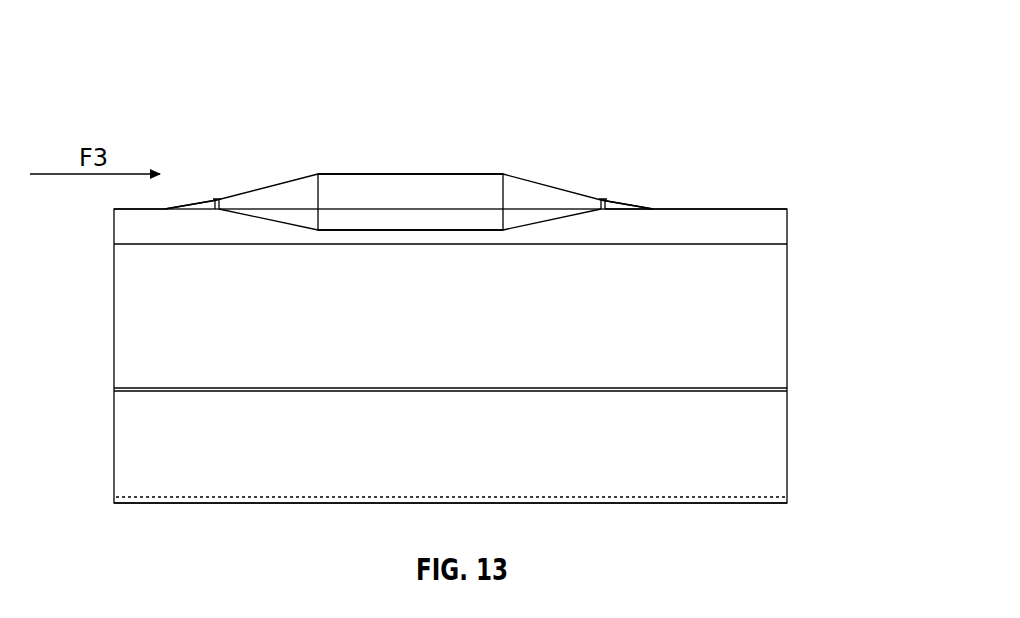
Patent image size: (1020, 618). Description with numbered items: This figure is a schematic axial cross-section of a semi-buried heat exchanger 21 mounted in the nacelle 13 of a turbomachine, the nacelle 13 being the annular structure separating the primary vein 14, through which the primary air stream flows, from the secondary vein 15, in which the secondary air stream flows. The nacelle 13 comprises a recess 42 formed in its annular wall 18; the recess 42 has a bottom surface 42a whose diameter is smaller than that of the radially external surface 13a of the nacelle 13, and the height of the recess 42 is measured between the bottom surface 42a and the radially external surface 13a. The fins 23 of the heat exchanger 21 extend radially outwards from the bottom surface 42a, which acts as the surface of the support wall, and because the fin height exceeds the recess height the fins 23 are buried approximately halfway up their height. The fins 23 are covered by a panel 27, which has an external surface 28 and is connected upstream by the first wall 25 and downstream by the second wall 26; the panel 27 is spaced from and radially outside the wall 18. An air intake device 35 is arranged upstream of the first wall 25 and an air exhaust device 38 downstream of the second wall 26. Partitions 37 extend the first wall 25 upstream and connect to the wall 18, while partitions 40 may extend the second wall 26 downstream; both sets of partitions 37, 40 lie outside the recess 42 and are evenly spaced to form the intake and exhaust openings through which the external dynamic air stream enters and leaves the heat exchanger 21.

The nacelle 13 is at (798, 206).
The radially external surface of the nacelle 13a is at (725, 206).
The primary vein 14 is at (450, 447).
The secondary vein 15 is at (450, 316).
The annular wall of the nacelle 18 is at (753, 208).
The heat exchanger 21 is at (634, 168).
The fins 23 is at (472, 222).
The first wall 25 is at (300, 178).
The second wall 26 is at (534, 178).
The panel 27 is at (450, 173).
The external surface of the panel 28 is at (476, 171).
The air intake device 35 is at (226, 192).
The partitions 37 is at (212, 198).
The air exhaust device 38 is at (598, 191).
The partitions 40 is at (630, 203).
The recess 42 is at (504, 231).
The bottom surface of the recess 42a is at (347, 229).